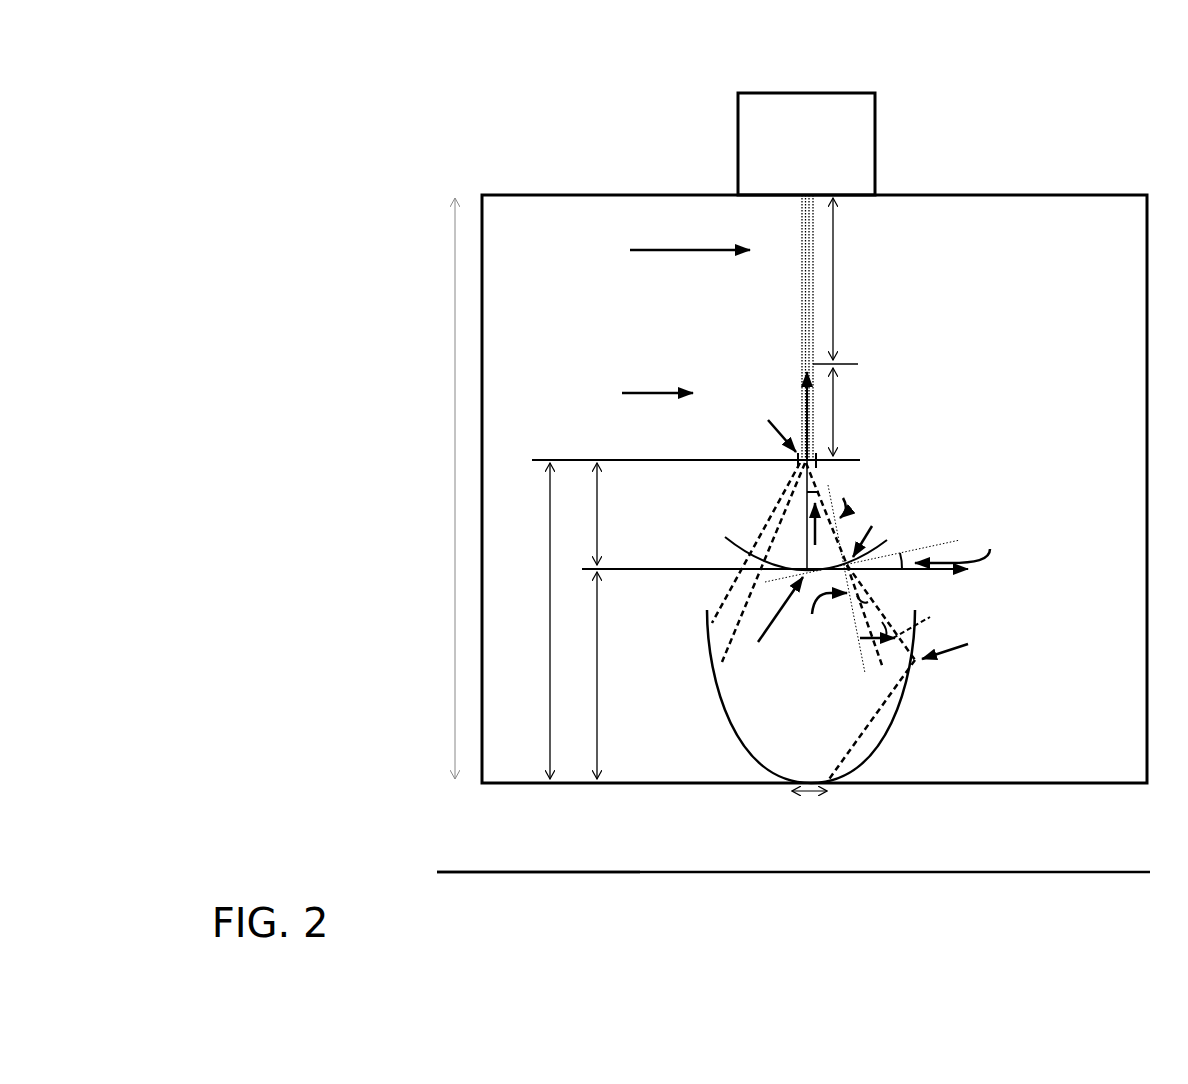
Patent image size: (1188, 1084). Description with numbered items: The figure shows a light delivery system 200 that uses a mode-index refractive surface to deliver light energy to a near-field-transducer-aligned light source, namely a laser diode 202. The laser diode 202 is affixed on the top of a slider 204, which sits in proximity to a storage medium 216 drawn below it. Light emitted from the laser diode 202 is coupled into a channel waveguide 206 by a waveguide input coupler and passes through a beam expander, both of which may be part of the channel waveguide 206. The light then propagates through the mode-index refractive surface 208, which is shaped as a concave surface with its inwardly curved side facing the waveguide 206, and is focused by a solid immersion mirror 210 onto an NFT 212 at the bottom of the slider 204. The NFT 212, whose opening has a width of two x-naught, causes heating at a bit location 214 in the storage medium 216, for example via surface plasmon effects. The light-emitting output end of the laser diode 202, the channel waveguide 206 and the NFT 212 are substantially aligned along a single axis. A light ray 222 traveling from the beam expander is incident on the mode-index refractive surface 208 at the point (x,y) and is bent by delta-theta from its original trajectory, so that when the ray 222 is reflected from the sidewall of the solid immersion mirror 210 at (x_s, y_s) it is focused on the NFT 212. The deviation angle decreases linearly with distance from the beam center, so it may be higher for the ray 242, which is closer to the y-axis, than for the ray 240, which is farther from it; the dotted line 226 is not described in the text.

The light delivery system 200 is at (319, 110).
The laser diode 202 is at (794, 166).
The slider 204 is at (1065, 267).
The channel waveguide 206 is at (801, 333).
The mode-index refractive surface 208 is at (727, 545).
The solid immersion mirror 210 is at (702, 656).
The NFT 212 is at (769, 795).
The bit location 214 is at (822, 878).
The storage medium 216 is at (513, 939).
The light ray 222 is at (822, 475).
The tangent line 226 is at (942, 538).
The ray 240 is at (724, 593).
The ray 242 is at (736, 664).